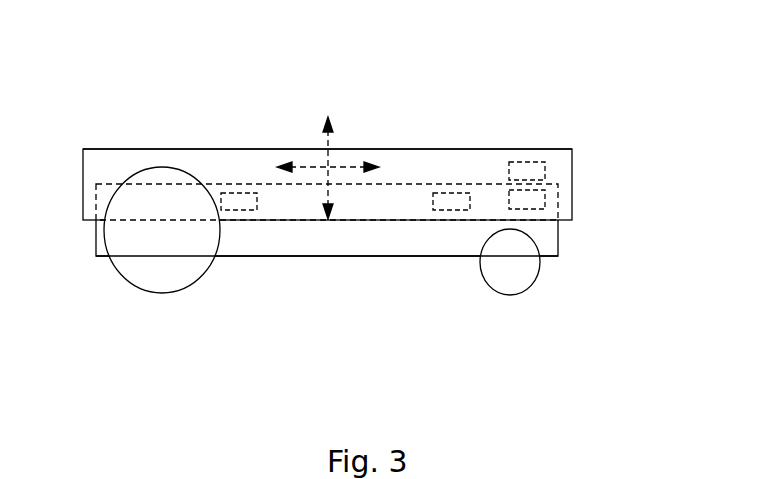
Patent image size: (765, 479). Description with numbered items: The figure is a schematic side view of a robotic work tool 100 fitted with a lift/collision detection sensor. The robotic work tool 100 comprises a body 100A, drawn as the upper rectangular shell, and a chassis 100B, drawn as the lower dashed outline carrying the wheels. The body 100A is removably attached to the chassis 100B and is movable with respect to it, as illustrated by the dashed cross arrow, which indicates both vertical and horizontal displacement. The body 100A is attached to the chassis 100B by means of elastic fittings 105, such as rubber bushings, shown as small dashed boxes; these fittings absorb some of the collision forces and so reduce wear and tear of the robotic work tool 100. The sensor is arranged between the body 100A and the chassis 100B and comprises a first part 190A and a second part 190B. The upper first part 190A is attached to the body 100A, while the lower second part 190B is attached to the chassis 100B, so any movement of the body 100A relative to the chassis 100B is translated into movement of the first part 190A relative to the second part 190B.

The robotic work tool 100 is at (114, 122).
The body 100A is at (376, 148).
The chassis 100B is at (343, 257).
The elastic fittings 105 is at (247, 212).
The first part 190A is at (544, 178).
The second part 190B is at (545, 204).